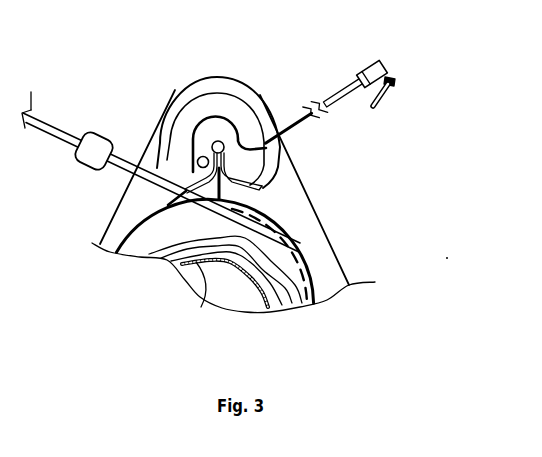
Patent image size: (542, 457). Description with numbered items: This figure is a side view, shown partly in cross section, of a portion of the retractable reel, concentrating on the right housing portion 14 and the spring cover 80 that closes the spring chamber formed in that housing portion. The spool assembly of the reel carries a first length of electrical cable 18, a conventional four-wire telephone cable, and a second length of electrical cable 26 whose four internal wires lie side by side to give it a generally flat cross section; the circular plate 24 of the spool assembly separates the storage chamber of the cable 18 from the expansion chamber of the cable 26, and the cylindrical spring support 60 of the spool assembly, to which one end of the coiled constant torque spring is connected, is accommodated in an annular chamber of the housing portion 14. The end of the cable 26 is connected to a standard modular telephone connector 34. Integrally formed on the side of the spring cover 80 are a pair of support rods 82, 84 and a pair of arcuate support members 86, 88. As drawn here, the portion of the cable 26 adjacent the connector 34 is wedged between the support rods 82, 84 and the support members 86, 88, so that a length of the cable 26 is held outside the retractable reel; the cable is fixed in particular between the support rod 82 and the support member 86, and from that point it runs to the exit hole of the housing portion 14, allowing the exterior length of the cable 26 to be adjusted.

The right housing portion 14 is at (166, 107).
The first length of electrical cable 18 is at (50, 130).
The circular plate 24 is at (287, 238).
The second length of electrical cable 26 is at (325, 105).
The RJ-11 connector 34 is at (357, 67).
The cylindrical spring support 60 is at (197, 290).
The spring cover 80 is at (238, 110).
The support rod 82 is at (193, 152).
The support rod 84 is at (224, 149).
The arcuate support member 86 is at (192, 175).
The arcuate support member 88 is at (262, 185).